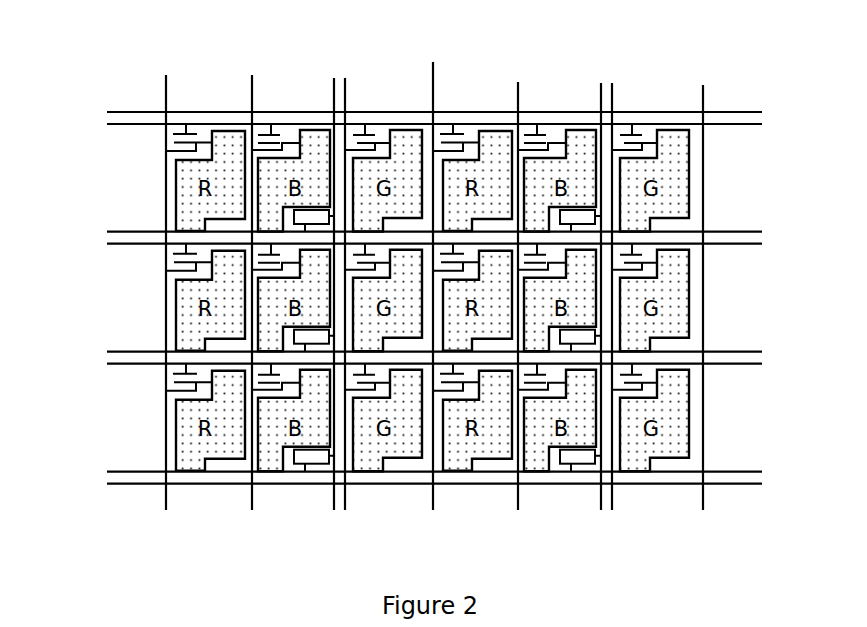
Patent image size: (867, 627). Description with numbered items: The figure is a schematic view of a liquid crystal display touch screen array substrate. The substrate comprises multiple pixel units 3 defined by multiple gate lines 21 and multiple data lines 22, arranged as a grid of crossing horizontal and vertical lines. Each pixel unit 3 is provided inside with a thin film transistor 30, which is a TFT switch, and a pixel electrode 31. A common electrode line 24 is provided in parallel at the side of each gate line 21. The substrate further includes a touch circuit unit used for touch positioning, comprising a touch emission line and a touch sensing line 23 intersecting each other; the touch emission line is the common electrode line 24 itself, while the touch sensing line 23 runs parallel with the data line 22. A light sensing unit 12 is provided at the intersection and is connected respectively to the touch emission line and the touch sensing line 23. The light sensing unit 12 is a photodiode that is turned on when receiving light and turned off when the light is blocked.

The pixel unit 3 is at (131, 297).
The light sensing unit 12 is at (570, 455).
The gate line 21 is at (733, 124).
The data line 22 is at (166, 98).
The touch sensing line 23 is at (334, 83).
The common electrode line 24 is at (755, 112).
The thin film transistor 30 is at (176, 318).
The pixel electrode 31 is at (172, 252).